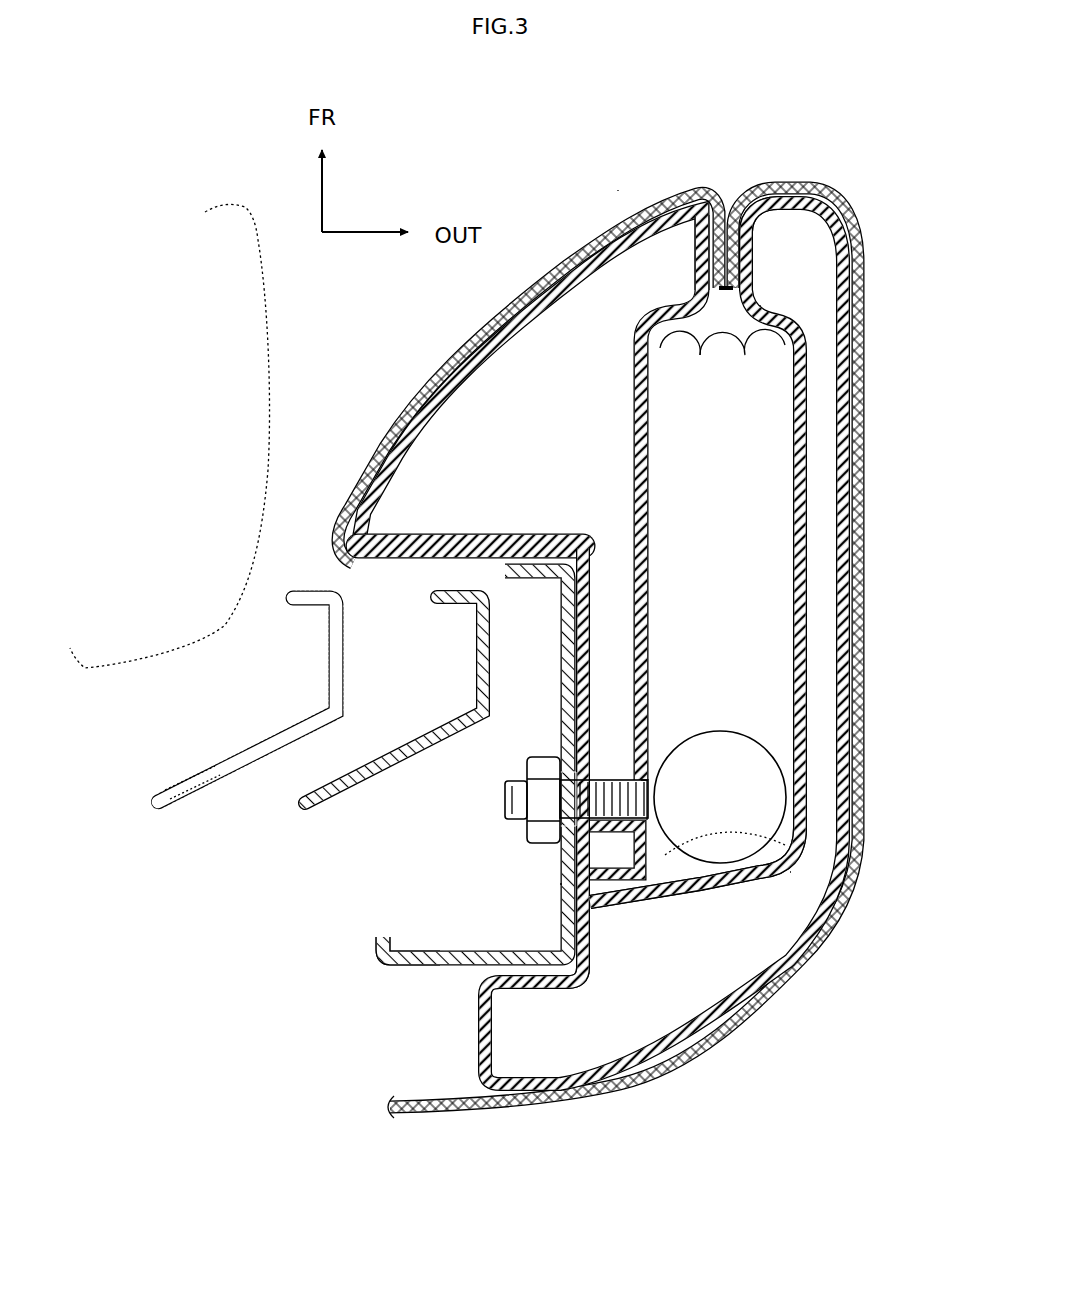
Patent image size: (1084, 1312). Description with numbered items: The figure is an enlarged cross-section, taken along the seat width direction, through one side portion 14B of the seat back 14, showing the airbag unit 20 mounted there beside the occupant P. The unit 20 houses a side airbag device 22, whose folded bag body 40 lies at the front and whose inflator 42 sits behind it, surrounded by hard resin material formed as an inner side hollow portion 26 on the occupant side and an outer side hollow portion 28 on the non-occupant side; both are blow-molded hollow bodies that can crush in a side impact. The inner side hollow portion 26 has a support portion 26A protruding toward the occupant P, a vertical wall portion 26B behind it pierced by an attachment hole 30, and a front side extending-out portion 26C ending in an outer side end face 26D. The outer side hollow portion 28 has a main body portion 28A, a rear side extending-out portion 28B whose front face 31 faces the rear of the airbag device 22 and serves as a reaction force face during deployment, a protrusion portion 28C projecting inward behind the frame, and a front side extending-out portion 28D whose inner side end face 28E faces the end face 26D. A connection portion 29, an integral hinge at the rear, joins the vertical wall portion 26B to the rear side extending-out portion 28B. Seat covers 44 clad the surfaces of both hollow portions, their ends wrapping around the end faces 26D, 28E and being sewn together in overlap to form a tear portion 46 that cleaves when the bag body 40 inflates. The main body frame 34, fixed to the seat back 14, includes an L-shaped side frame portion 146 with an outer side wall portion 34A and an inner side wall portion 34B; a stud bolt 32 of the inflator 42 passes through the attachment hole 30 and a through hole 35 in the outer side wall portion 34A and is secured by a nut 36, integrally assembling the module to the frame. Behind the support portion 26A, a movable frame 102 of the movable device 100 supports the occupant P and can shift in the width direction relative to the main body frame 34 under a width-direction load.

The seat back 14 is at (458, 1134).
The side portion 14B is at (563, 262).
The airbag unit 20 is at (618, 190).
The side airbag device 22 is at (760, 305).
The inner side hollow portion 26 is at (625, 451).
The support portion 26A is at (422, 376).
The vertical wall portion 26B is at (560, 677).
The front side extending-out portion 26C is at (680, 335).
The outer side end face 26D is at (706, 190).
The outer side hollow portion 28 is at (710, 611).
The main body portion 28A is at (864, 577).
The rear side extending-out portion 28B is at (808, 836).
The protrusion portion 28C is at (522, 972).
The front side extending-out portion 28D is at (775, 335).
The inner side end face 28E is at (782, 197).
The connection portion 29 is at (562, 884).
The attachment hole 30 is at (652, 778).
The front face 31 is at (790, 872).
The stud bolt 32 is at (505, 800).
The main body frame 34 is at (483, 793).
The outer side wall portion 34A is at (560, 700).
The inner side wall portion 34B is at (418, 950).
The through hole 35 is at (557, 774).
The nut 36 is at (527, 838).
The bag body 40 is at (632, 468).
The inflator 42 is at (742, 735).
The seat cover 44 is at (394, 420).
The tear portion 46 is at (738, 190).
The movable device 100 is at (403, 700).
The movable frame 102 is at (333, 680).
The side frame portion 146 is at (438, 967).
The occupant P is at (295, 319).